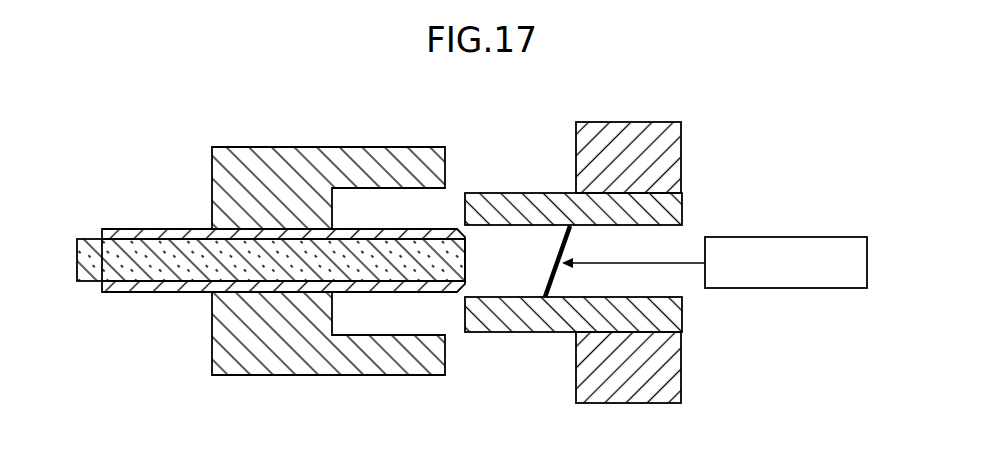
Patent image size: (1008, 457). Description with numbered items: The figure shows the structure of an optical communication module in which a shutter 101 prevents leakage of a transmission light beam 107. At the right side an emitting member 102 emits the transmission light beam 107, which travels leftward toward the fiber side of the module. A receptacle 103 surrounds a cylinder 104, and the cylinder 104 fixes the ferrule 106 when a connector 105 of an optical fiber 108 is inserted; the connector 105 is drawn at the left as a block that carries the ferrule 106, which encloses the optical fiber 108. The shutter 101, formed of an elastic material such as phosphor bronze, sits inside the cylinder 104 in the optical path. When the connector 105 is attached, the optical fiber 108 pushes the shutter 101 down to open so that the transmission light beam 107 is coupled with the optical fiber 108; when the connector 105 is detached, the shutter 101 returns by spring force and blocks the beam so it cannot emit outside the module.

The shutter 101 is at (552, 279).
The emitting member 102 is at (768, 243).
The receptacle 103 is at (682, 130).
The cylinder 104 is at (547, 203).
The connector 105 is at (322, 200).
The ferrule 106 is at (173, 227).
The transmission light beam 107 is at (663, 265).
The optical fiber 108 is at (130, 272).